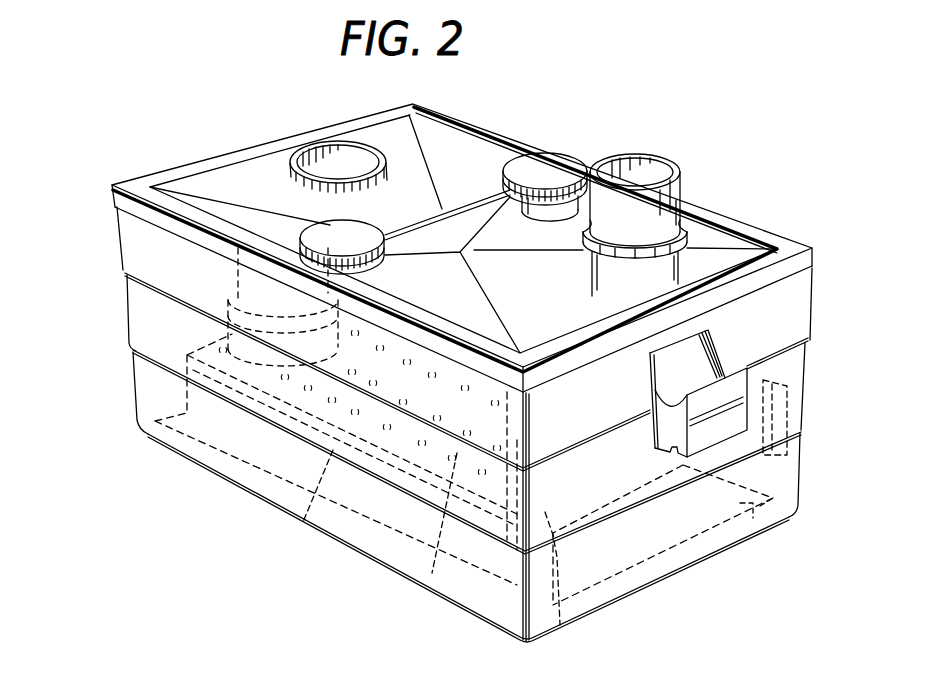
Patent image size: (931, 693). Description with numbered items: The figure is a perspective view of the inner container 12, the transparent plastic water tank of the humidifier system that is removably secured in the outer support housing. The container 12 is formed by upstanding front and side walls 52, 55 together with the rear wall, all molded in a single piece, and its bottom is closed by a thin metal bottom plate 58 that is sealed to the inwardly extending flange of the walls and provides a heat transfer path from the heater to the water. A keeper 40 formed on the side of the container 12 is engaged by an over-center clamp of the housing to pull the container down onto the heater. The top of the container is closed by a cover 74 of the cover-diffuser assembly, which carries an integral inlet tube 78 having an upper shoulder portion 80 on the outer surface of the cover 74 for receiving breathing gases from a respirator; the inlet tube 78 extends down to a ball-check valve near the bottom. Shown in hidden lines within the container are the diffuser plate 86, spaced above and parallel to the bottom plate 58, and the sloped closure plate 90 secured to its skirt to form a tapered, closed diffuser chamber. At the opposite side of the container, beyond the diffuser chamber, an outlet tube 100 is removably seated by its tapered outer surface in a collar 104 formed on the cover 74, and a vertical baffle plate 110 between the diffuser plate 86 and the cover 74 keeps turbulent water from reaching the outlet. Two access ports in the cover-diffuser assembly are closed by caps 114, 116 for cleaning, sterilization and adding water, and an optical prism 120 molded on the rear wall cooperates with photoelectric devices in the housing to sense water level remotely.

The inner container 12 is at (122, 388).
The keeper 40 is at (733, 387).
The front wall 52 is at (367, 533).
The side wall 55 is at (633, 553).
The bottom plate 58 is at (762, 530).
The cover 74 is at (702, 215).
The inlet tube 78 is at (333, 162).
The upper shoulder portion 80 is at (292, 183).
The diffuser plate 86 is at (432, 573).
The closure plate 90 is at (303, 522).
The outlet tube 100 is at (665, 203).
The collar 104 is at (662, 270).
The vertical baffle plate 110 is at (560, 625).
The cap 114 is at (323, 237).
The cap 116 is at (553, 165).
The optical prism 120 is at (793, 422).